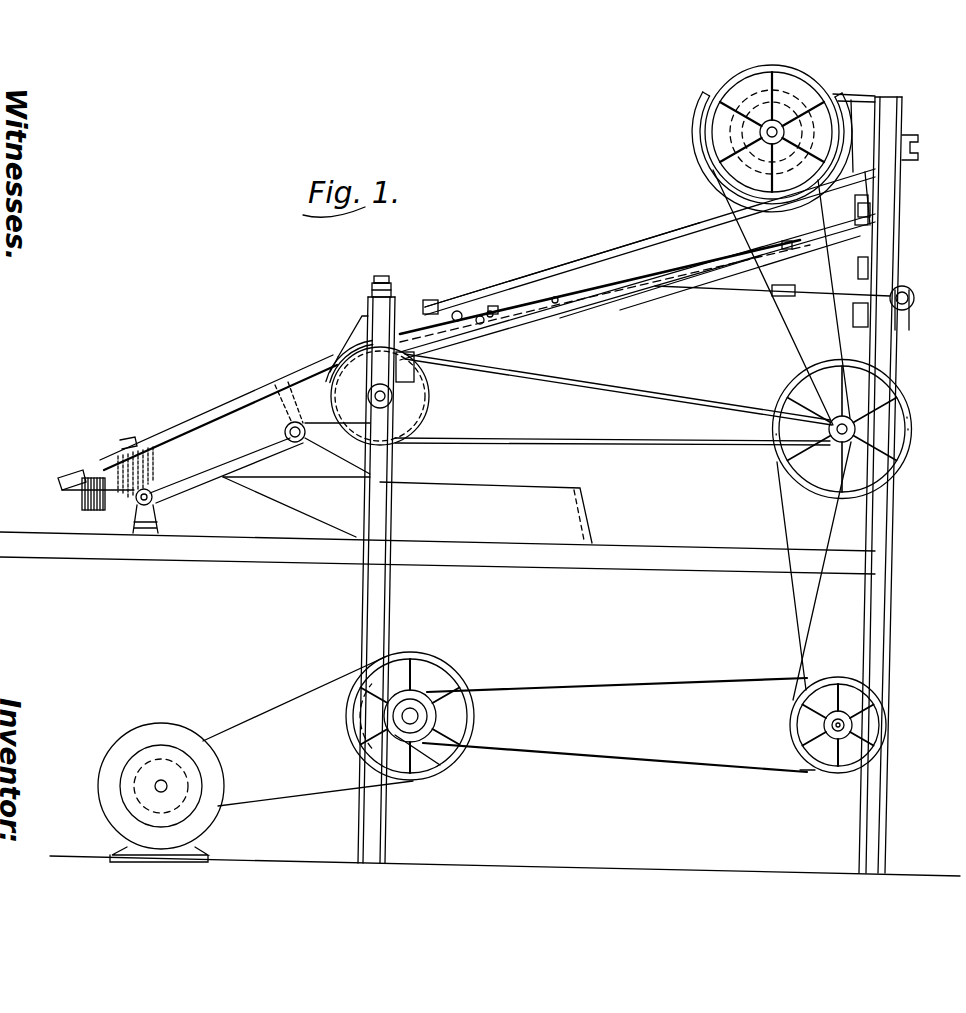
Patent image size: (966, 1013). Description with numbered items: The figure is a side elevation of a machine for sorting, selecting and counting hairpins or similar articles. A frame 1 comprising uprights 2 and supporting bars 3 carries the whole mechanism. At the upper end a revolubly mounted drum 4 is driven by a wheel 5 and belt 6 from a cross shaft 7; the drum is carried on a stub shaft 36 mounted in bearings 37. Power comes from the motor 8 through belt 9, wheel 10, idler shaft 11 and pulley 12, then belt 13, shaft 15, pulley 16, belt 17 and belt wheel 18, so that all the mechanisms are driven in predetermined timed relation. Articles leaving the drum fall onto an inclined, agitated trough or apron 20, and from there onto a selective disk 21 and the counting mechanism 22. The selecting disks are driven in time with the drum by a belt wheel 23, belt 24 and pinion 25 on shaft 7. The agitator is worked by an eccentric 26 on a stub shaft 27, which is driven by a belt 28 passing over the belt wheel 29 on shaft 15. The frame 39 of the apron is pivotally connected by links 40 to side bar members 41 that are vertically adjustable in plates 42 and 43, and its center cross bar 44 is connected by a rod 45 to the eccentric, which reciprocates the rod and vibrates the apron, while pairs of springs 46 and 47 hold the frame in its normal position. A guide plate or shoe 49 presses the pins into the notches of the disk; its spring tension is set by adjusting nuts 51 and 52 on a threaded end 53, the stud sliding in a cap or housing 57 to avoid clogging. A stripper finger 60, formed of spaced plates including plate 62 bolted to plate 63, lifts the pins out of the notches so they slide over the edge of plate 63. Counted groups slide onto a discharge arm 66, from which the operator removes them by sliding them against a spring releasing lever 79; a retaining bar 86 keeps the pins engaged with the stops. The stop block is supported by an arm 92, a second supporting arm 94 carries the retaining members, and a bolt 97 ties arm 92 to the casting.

The frame 1 is at (346, 561).
The uprights 2 is at (392, 604).
The supporting bars 3 is at (216, 561).
The drum 4 is at (703, 155).
The wheel 5 is at (718, 117).
The belt 6 is at (785, 326).
The cross shaft 7 is at (838, 414).
The motor 8 is at (155, 720).
The belt 9 is at (302, 700).
The wheel 10 is at (445, 662).
The idler shaft 11 is at (402, 717).
The pulley 12 is at (440, 748).
The belt 13 is at (540, 752).
The shaft 15 is at (853, 725).
The pulley 16 is at (845, 673).
The belt 17 is at (790, 611).
The belt wheel 18 is at (822, 486).
The trough or apron 20 is at (596, 253).
The selective disk 21 is at (431, 414).
The counting mechanism 22 is at (186, 478).
The belt wheel 23 is at (431, 399).
The belt 24 is at (538, 371).
The pinion 25 is at (829, 430).
The eccentric 26 is at (915, 298).
The stub shaft 27 is at (905, 288).
The belt 28 is at (410, 337).
The belt wheel 29 is at (848, 775).
The stub shaft 36 is at (760, 132).
The bearings 37 is at (898, 118).
The frame of the trough or apron 39 is at (455, 311).
The links 40 is at (493, 305).
The side bar members 41 is at (610, 295).
The plate 42 is at (418, 378).
The plate 43 is at (860, 215).
The center cross bar 44 is at (628, 262).
The link or rod 45 is at (727, 291).
The springs 46 is at (571, 276).
The springs 47 is at (676, 304).
The guide plate or shoe 49 is at (338, 351).
The adjusting nut 51 is at (392, 290).
The adjusting nut 52 is at (392, 282).
The threaded end 53 is at (385, 276).
The cap or housing 57 is at (372, 292).
The stripper finger 60 is at (380, 396).
The plate 62 is at (330, 369).
The plate 63 is at (305, 378).
The arm 66 is at (80, 494).
The spring releasing lever 79 is at (88, 476).
The retaining bar 86 is at (193, 421).
The arm 92 is at (138, 498).
The supporting arm 94 is at (155, 460).
The bolt 97 is at (154, 498).